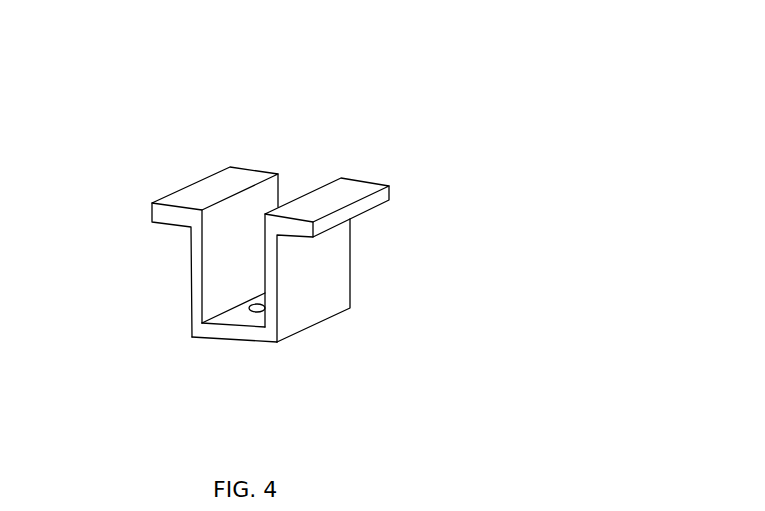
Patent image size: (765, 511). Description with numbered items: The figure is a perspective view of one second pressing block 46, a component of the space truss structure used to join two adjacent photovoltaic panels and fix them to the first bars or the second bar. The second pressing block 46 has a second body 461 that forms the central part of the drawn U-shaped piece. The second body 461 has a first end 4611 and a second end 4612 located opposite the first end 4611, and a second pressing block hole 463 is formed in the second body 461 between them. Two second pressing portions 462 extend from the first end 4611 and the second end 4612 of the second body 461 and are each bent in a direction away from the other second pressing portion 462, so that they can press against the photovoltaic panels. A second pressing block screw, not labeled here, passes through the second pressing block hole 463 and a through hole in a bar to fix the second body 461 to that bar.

The second pressing block 46 is at (205, 54).
The second body 461 is at (240, 337).
The second pressing portion 462 is at (198, 282).
The first end 4611 is at (228, 307).
The second end 4612 is at (266, 323).
The second pressing block hole 463 is at (260, 307).